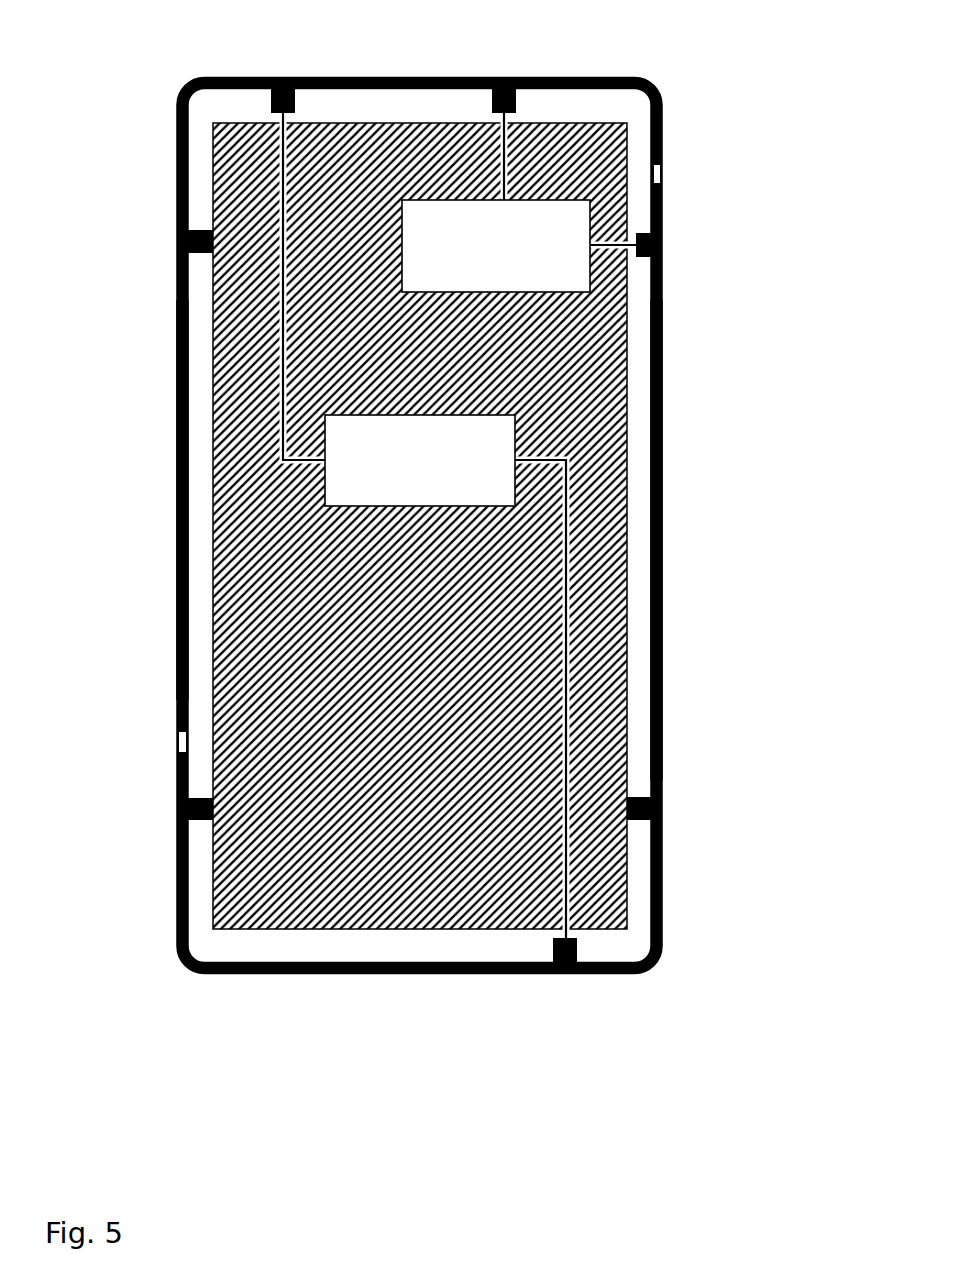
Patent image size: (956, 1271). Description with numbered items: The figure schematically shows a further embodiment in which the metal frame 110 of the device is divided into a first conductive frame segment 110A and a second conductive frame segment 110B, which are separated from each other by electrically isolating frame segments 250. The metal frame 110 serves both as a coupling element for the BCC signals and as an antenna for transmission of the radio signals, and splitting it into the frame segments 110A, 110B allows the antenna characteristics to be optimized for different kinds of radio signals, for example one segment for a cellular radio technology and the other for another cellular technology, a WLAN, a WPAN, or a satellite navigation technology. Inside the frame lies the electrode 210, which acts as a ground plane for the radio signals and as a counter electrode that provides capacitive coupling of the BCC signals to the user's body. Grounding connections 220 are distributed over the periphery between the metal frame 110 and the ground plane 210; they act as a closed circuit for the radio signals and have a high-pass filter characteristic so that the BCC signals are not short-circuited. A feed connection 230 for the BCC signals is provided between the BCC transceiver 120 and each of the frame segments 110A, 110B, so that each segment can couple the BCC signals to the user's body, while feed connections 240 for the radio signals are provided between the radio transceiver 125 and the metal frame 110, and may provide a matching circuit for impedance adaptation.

The metal frame 110 is at (195, 79).
The first conductive frame segment 110A is at (177, 373).
The second conductive frame segment 110B is at (662, 617).
The BCC transceiver 120 is at (516, 288).
The radio transceiver 125 is at (402, 503).
The electrode 210 is at (580, 123).
The grounding connection 220 is at (177, 253).
The feed connection for the BCC signals 230 is at (512, 79).
The feed connection for the radio signals 240 is at (289, 79).
The electrically isolating frame segment 250 is at (662, 178).